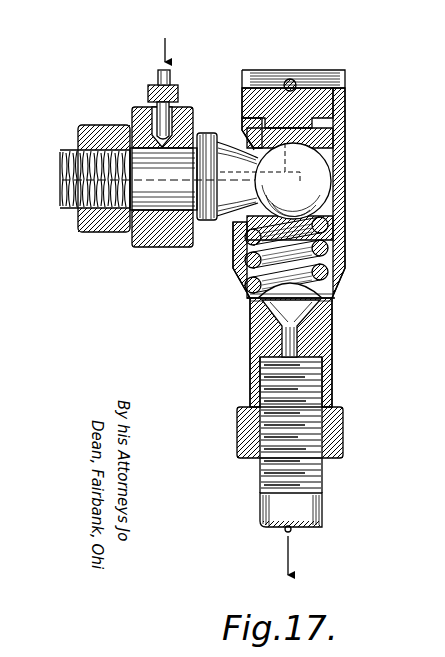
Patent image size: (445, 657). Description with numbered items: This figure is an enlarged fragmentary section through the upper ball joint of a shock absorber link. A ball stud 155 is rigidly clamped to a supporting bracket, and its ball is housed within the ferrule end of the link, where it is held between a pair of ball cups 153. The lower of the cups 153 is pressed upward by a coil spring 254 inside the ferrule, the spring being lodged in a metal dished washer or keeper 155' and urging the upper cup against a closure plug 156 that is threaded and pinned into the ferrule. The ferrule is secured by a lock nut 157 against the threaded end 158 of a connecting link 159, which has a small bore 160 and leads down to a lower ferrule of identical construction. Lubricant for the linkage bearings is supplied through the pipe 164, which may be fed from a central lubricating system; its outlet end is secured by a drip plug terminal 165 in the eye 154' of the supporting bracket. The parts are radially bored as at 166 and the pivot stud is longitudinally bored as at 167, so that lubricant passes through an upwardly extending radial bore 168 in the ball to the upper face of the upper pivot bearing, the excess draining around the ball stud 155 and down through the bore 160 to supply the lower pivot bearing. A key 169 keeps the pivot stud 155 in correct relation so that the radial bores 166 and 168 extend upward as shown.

The ball cups 153 is at (330, 140).
The eye of the supporting bracket 154' is at (175, 167).
The ball stud 155 is at (325, 181).
The dished washer or keeper 155' is at (323, 308).
The closure plug 156 is at (313, 102).
The lock nut 157 is at (335, 430).
The threaded end 158 is at (318, 480).
The connecting link 159 is at (264, 503).
The bore 160 is at (296, 338).
The pipe 164 is at (160, 80).
The drip plug terminal 165 is at (165, 112).
The radial bore 166 is at (128, 122).
The longitudinal bore 167 is at (228, 218).
The radial bore in the ball 168 is at (320, 163).
The key 169 is at (154, 248).
The coil spring 254 is at (343, 258).